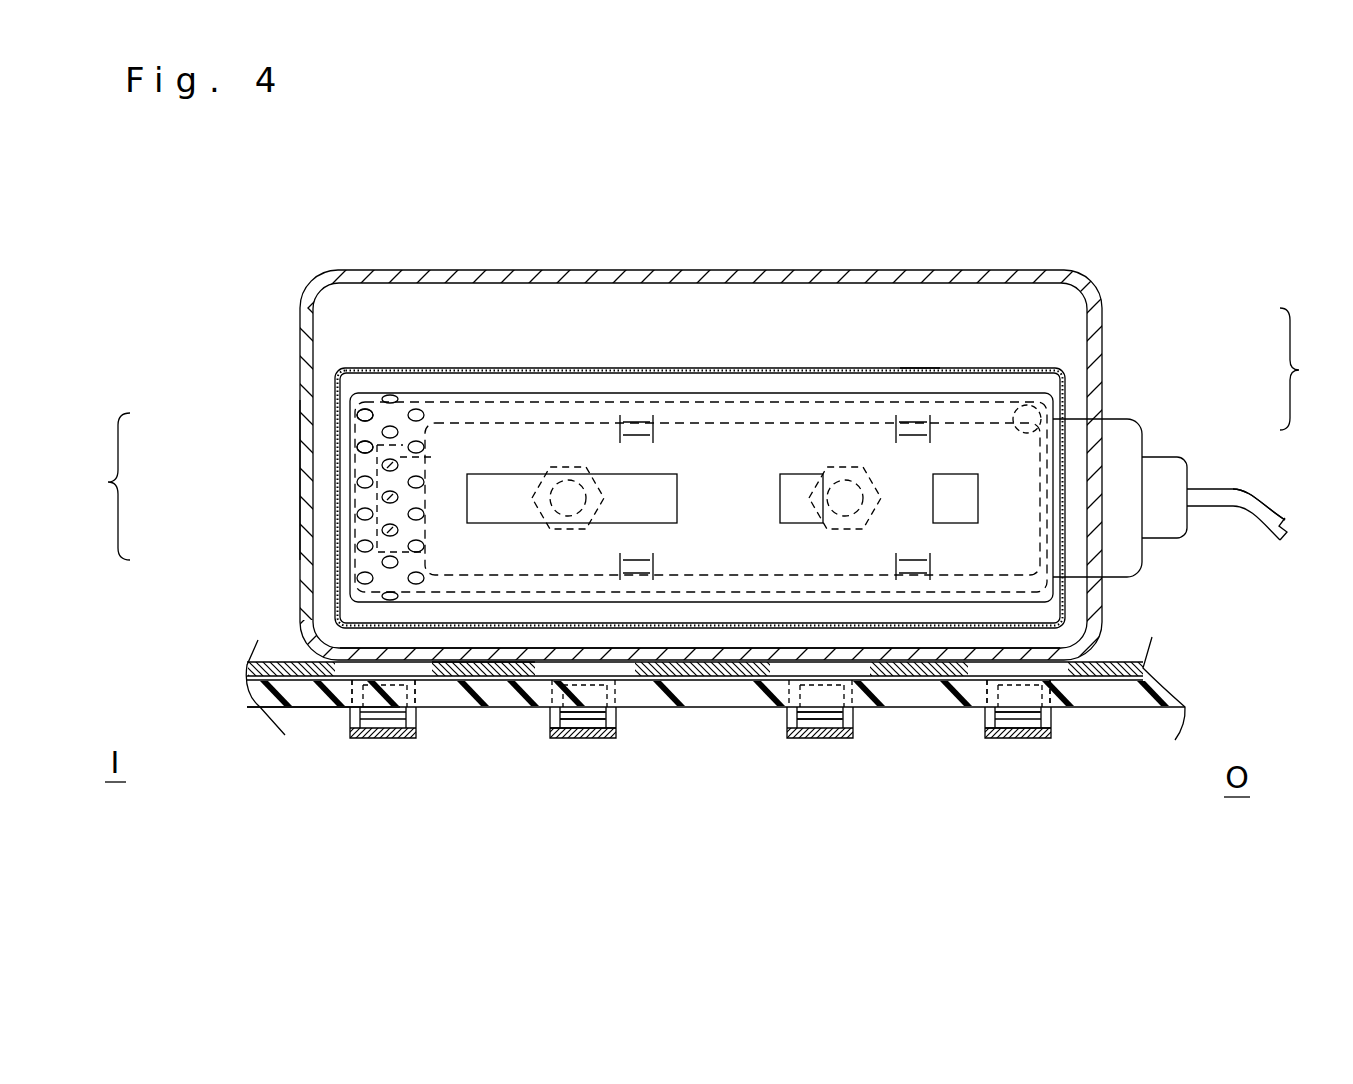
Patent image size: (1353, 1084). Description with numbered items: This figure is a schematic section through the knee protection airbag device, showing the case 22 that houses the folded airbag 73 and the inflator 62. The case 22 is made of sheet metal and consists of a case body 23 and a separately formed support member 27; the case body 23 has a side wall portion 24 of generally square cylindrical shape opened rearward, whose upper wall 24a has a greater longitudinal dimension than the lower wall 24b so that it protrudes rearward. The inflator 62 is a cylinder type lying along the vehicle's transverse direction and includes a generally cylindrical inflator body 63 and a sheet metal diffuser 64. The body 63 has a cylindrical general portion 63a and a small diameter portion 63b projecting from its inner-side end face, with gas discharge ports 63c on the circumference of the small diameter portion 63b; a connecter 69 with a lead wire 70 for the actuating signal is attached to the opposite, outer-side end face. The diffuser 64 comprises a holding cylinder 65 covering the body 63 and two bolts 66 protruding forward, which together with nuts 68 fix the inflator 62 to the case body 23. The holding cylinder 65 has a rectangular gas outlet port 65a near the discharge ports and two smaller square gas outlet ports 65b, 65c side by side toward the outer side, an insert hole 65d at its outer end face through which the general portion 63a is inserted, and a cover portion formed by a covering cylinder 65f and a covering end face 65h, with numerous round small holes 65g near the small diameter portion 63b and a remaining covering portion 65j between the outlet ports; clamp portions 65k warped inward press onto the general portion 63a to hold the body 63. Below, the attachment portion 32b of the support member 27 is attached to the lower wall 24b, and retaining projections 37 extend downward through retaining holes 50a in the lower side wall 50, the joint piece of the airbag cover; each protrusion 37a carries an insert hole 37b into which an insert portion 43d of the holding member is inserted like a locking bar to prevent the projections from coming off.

The case 22 is at (98, 486).
The case body 23 is at (303, 475).
The side wall portion 24 is at (1105, 318).
The upper wall 24a is at (875, 272).
The lower wall 24b is at (705, 657).
The support member 27 is at (283, 662).
The attachment portion 32b is at (490, 665).
The retaining projection 37 is at (348, 720).
The protrusion 37a is at (610, 718).
The insert hole 37b is at (563, 740).
The insert portion 43d is at (587, 718).
The lower side wall 50 is at (303, 709).
The retaining hole 50a is at (395, 740).
The inflator 62 is at (1309, 369).
The inflator body 63 is at (1185, 458).
The general portion 63a is at (743, 423).
The small diameter portion 63b is at (400, 430).
The gas discharge port 63c is at (433, 455).
The diffuser 64 is at (1055, 397).
The holding cylinder 65 is at (615, 396).
The gas outlet port 65a is at (478, 500).
The gas outlet port 65b is at (800, 487).
The gas outlet port 65c is at (965, 500).
The insert hole 65d is at (1020, 407).
The covering cylinder 65f is at (383, 397).
The small hole 65g is at (360, 446).
The covering end face 65h is at (360, 407).
The remaining covering portion 65j is at (893, 745).
The clamp portion 65k is at (640, 430).
The bolt 66 is at (550, 468).
The nut 68 is at (566, 467).
The connecter 69 is at (1167, 480).
The lead wire 70 is at (1258, 518).
The airbag 73 is at (917, 368).